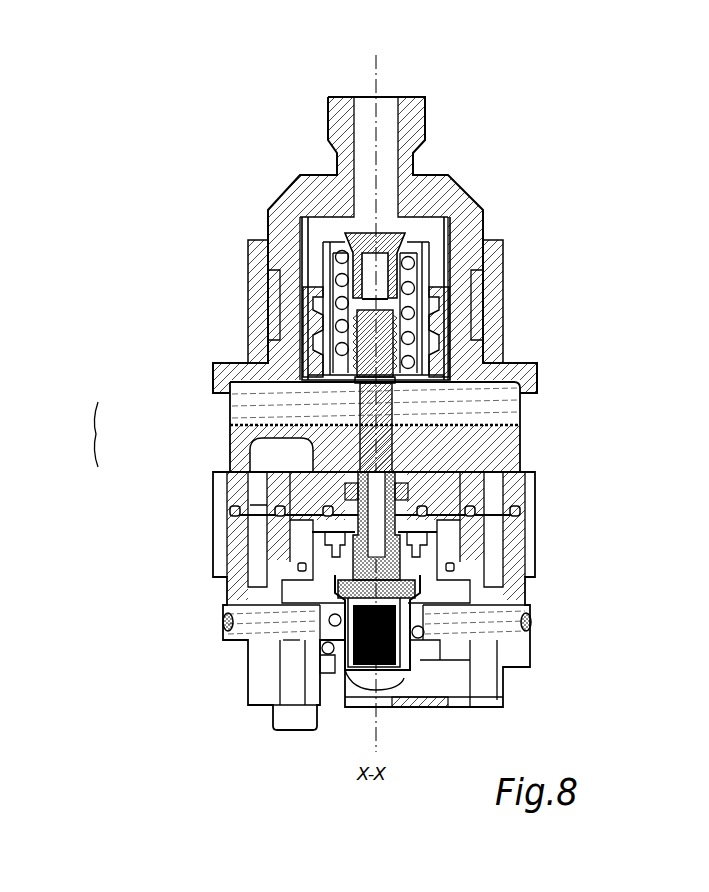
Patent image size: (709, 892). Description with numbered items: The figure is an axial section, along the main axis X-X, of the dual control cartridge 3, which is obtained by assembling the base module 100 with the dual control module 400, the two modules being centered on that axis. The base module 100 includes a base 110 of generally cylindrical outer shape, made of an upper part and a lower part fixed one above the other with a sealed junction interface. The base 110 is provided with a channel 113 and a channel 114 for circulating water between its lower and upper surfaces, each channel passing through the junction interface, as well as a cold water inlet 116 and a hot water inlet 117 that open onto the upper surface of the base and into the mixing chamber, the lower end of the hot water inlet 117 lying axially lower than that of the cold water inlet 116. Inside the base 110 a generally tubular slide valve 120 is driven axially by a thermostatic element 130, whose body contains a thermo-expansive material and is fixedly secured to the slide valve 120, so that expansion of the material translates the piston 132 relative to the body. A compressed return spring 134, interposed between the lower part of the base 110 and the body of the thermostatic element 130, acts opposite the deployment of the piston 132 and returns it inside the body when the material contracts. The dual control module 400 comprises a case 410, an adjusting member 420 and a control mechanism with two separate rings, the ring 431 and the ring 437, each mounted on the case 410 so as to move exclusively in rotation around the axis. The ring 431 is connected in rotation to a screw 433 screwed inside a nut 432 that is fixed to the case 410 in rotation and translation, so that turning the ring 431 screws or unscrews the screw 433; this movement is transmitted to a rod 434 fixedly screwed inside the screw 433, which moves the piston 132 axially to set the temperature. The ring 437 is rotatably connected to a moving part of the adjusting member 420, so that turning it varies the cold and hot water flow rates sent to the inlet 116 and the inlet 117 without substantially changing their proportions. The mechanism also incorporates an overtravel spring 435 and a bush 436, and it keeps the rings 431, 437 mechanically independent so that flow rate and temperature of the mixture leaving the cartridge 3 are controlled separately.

The dual control cartridge 3 is at (85, 434).
The base module 100 is at (208, 597).
The base 110 is at (244, 670).
The channel 113 is at (255, 545).
The channel 114 is at (470, 585).
The cold water inlet 116 is at (307, 537).
The hot water inlet 117 is at (493, 567).
The slide valve 120 is at (532, 588).
The thermostatic element 130 is at (418, 650).
The piston 132 is at (408, 492).
The return spring 134 is at (283, 642).
The dual control module 400 is at (205, 377).
The case 410 is at (208, 365).
The adjusting member 420 is at (527, 435).
The ring 431 is at (447, 190).
The nut 432 is at (440, 310).
The screw 433 is at (443, 330).
The rod 434 is at (400, 393).
The overtravel spring 435 is at (433, 263).
The bush 436 is at (352, 342).
The ring 437 is at (248, 267).